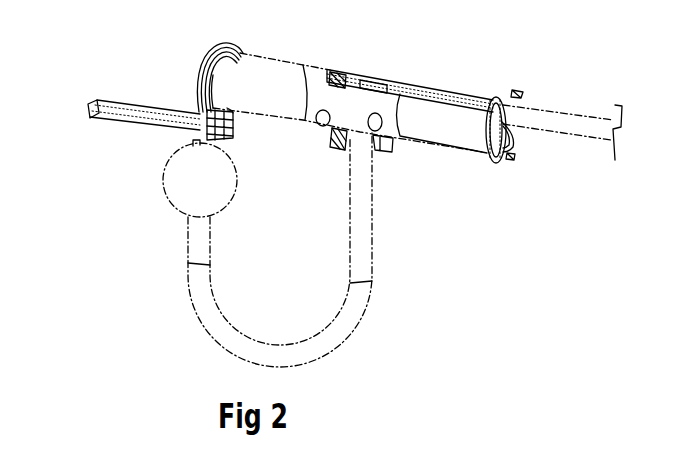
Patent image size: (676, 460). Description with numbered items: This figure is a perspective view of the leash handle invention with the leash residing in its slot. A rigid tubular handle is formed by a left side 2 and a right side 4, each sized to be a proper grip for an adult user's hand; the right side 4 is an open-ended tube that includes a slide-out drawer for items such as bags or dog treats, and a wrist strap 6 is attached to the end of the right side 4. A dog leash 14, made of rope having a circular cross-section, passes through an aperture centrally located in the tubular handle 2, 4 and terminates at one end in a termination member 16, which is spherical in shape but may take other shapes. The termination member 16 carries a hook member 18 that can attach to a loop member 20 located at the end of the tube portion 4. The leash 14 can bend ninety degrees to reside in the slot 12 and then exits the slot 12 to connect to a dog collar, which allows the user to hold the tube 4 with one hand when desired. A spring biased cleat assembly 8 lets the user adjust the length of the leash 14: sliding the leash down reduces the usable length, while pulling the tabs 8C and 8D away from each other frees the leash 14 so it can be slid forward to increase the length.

The left side 2 is at (480, 173).
The right side 4 is at (268, 68).
The wrist strap 6 is at (100, 100).
The cleat assembly 8 is at (330, 137).
The tab 8C is at (337, 133).
The tab 8D is at (377, 147).
The slot 12 is at (360, 78).
The dog leash 14 is at (358, 252).
The termination member 16 is at (186, 196).
The hook member 18 is at (188, 146).
The loop member 20 is at (193, 107).